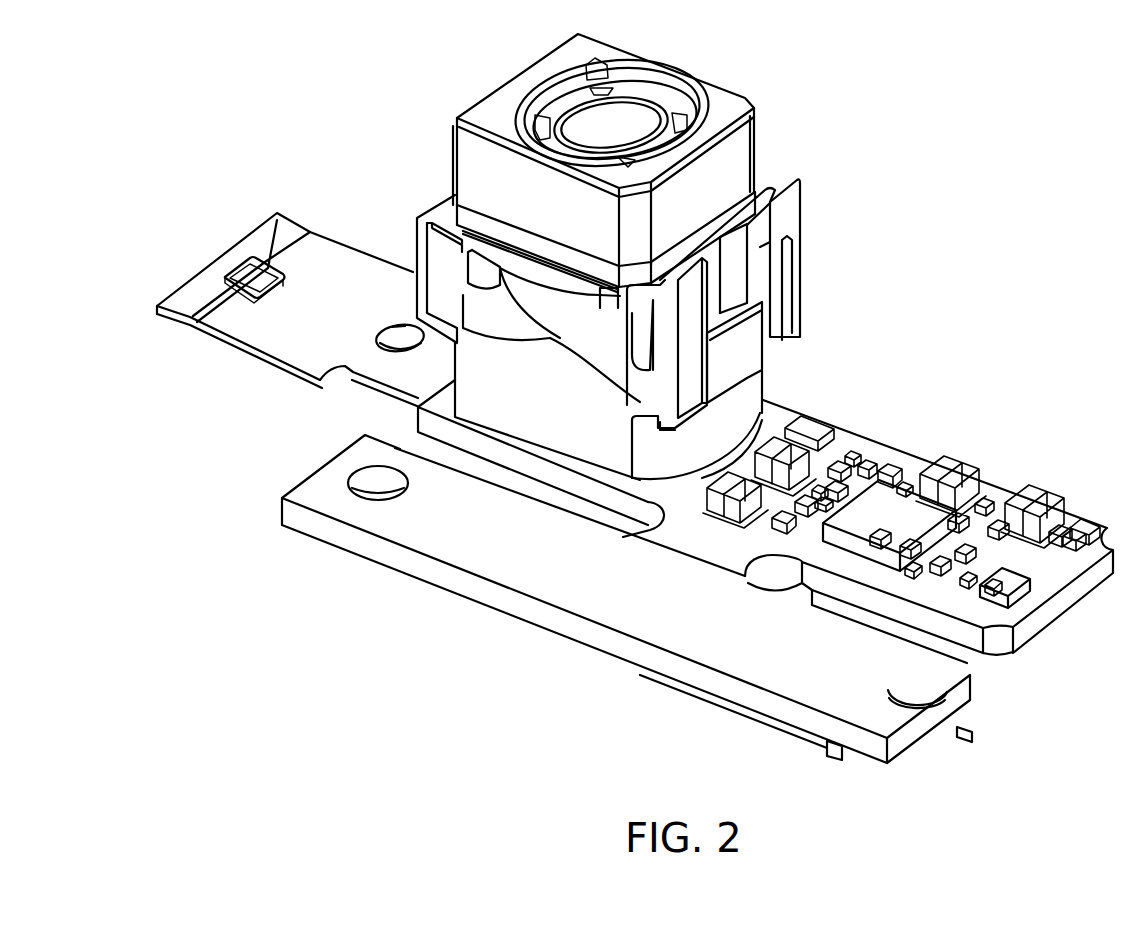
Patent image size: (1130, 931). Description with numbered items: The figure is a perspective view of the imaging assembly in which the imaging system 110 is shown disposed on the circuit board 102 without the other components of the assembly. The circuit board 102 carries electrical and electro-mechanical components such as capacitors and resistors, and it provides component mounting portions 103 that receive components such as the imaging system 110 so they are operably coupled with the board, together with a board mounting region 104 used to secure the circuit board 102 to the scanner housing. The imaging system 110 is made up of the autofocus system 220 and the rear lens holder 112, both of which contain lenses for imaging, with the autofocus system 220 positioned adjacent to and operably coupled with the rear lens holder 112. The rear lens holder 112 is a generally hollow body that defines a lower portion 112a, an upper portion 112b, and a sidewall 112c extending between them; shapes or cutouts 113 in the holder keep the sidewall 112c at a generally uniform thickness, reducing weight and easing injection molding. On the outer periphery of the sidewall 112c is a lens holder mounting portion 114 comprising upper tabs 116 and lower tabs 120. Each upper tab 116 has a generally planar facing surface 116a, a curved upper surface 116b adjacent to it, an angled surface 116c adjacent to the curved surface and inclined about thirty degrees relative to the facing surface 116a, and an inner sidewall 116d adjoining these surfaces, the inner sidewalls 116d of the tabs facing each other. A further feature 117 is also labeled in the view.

The imaging system 110 is at (807, 92).
The autofocus system 220 is at (737, 100).
The cutouts 113 is at (458, 273).
The rear lens holder 112 is at (513, 398).
The lower portion 112a is at (760, 415).
The upper portion 112b is at (445, 190).
The sidewall 112c is at (415, 297).
The lens holder mounting portion 114 is at (815, 203).
The upper tabs 116 is at (783, 212).
The facing surface 116a is at (797, 277).
The curved upper surface 116b is at (812, 173).
The angled surface 116c is at (755, 210).
The inner sidewall 116d is at (783, 248).
The recess 117 is at (725, 310).
The lower tabs 120 is at (740, 345).
The component mounting portions 103 is at (555, 457).
The circuit board 102 is at (513, 603).
The board mounting region 104 is at (370, 482).